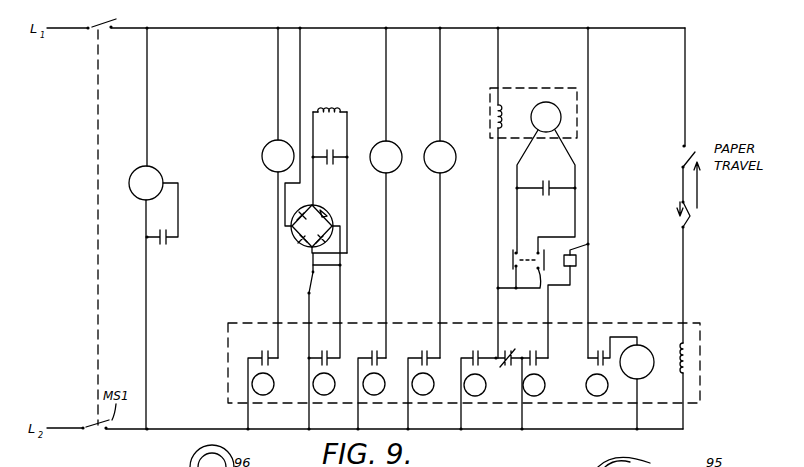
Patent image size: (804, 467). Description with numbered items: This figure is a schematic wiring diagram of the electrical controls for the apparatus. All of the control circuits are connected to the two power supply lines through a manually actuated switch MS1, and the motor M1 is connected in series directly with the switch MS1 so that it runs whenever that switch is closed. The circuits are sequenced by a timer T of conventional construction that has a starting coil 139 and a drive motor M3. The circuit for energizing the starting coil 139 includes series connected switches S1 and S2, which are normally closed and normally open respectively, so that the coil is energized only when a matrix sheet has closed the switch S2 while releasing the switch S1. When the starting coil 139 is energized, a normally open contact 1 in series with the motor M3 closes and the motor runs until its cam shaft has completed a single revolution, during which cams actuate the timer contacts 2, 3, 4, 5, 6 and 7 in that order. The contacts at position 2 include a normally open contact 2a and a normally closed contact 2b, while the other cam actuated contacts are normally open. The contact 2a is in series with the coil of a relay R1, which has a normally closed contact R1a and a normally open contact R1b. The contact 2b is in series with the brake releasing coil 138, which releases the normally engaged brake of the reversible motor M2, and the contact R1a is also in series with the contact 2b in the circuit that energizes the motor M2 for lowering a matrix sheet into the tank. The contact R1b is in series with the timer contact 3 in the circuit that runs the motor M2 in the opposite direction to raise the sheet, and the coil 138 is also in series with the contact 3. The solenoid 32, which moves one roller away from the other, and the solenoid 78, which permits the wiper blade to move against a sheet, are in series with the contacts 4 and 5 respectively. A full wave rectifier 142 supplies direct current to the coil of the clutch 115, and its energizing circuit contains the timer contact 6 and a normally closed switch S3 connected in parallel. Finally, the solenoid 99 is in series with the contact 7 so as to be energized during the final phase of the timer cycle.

The solenoid 99 is at (266, 150).
The solenoid 78 is at (396, 146).
The solenoid 32 is at (451, 146).
The clutch 115 is at (336, 86).
The full wave rectifier 142 is at (326, 208).
The brake releasing coil 138 is at (504, 100).
The starting coil 139 is at (690, 372).
The motor M1 is at (153, 228).
The motor M2 is at (545, 177).
The drive motor M3 is at (637, 387).
The switch S1 is at (688, 222).
The switch S2 is at (697, 153).
The switch S3 is at (307, 282).
The relay R1 is at (577, 260).
The normally closed relay contact R1a is at (518, 249).
The normally open relay contact R1b is at (547, 284).
The manually actuated switch MS1 is at (104, 30).
The timer T is at (627, 330).
The normally open contact 2a is at (541, 353).
The normally closed contact 2b is at (509, 355).
The normally open contact 1 is at (611, 366).
The timer contacts 2 is at (534, 385).
The timer contact 3 is at (479, 358).
The timer contact 4 is at (424, 390).
The timer contact 5 is at (372, 390).
The timer contact 6 is at (323, 347).
The timer contact 7 is at (263, 390).